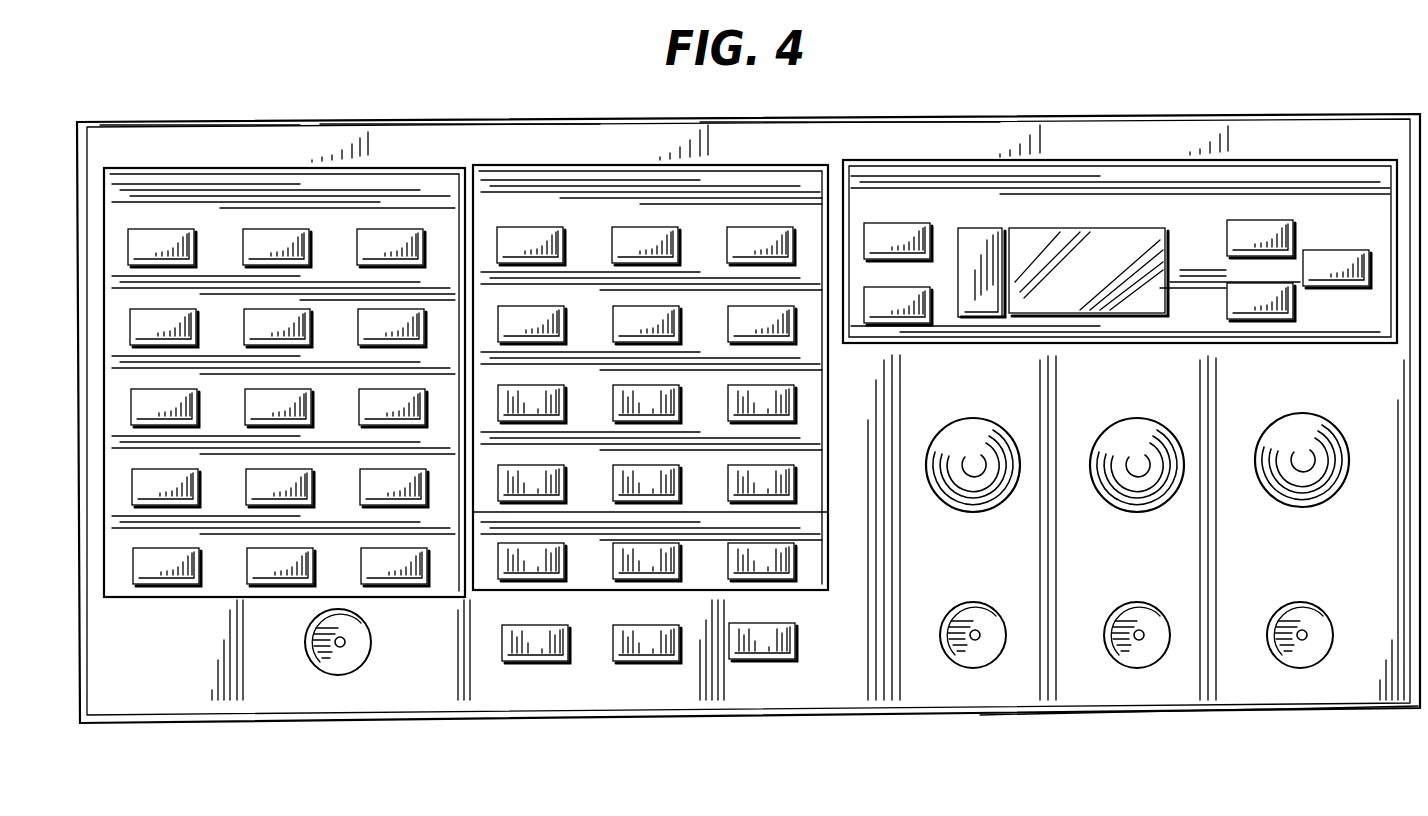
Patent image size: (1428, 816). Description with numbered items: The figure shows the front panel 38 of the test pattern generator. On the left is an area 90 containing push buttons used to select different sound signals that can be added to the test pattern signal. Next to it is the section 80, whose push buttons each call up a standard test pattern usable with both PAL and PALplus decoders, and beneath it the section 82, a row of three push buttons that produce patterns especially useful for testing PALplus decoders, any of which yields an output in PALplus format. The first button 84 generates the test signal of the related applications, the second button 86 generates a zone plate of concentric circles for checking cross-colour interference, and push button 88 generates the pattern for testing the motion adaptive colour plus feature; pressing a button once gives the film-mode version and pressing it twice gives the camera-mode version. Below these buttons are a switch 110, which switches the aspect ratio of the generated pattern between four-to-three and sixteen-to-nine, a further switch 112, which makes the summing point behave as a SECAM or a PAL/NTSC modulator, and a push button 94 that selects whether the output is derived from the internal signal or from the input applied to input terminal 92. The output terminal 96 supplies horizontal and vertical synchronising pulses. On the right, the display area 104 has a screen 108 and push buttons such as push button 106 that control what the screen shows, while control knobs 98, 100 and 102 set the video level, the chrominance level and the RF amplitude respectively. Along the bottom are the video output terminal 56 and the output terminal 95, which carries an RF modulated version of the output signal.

The front panel 38 is at (280, 121).
The area containing push buttons 90 is at (190, 168).
The section 80 is at (681, 388).
The section 82 is at (681, 613).
The first button 84 is at (520, 572).
The second button 86 is at (625, 567).
The push button 88 is at (772, 568).
The further switch 112 is at (533, 655).
The switch 110 is at (667, 652).
The push button 94 is at (766, 643).
The output terminal 96 is at (338, 675).
The display area 104 is at (1120, 204).
The screen 108 is at (1080, 228).
The push button 106 is at (1320, 250).
The control knob 98 is at (967, 440).
The control knob 100 is at (1133, 440).
The control knob 102 is at (1304, 440).
The input terminal 92 is at (1000, 618).
The video output terminal 56 is at (1133, 602).
The output terminal 95 is at (1302, 602).